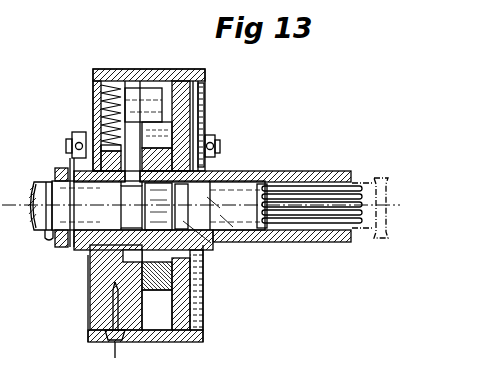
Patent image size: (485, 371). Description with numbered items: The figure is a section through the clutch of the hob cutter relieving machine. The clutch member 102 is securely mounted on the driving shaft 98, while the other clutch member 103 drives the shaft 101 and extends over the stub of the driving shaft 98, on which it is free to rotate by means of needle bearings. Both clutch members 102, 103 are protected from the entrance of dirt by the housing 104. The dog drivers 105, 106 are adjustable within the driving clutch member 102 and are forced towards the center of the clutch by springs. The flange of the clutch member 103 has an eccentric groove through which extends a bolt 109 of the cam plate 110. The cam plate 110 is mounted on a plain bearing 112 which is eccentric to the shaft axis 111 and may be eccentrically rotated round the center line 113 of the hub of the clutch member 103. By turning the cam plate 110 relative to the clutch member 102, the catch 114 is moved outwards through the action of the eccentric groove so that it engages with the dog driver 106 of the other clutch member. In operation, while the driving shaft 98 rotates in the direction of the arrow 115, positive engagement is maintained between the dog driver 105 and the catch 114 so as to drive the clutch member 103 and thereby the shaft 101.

The driving shaft 98 is at (40, 183).
The shaft 101 is at (379, 178).
The clutch member 102 is at (58, 176).
The clutch member 103 is at (311, 178).
The housing 104 is at (171, 343).
The dog driver 105 is at (168, 110).
The dog driver 106 is at (155, 87).
The bolt 109 is at (210, 139).
The cam plate 110 is at (157, 283).
The shaft axis 111 is at (253, 243).
The plain bearing 112 is at (122, 262).
The center line 113 is at (203, 259).
The catch 114 is at (176, 126).
The arrow 115 is at (48, 236).